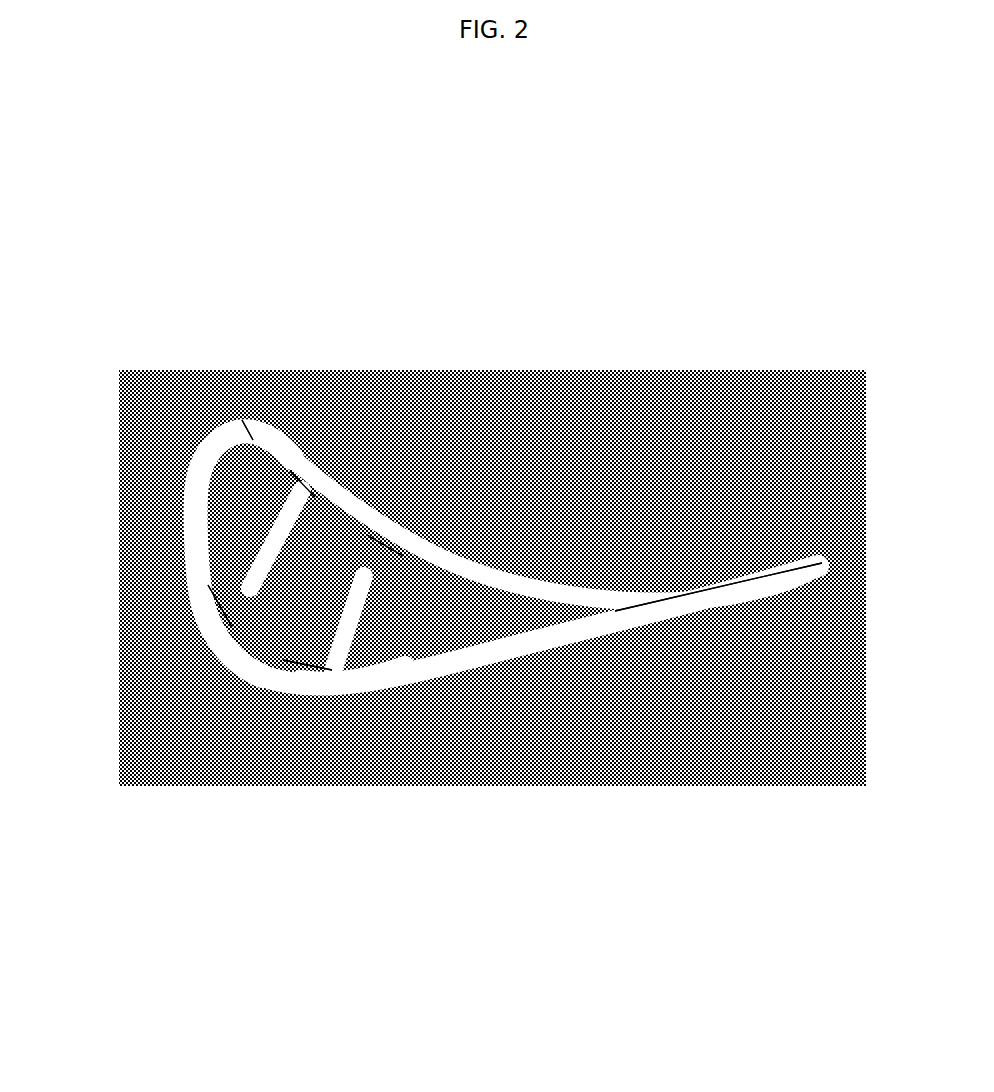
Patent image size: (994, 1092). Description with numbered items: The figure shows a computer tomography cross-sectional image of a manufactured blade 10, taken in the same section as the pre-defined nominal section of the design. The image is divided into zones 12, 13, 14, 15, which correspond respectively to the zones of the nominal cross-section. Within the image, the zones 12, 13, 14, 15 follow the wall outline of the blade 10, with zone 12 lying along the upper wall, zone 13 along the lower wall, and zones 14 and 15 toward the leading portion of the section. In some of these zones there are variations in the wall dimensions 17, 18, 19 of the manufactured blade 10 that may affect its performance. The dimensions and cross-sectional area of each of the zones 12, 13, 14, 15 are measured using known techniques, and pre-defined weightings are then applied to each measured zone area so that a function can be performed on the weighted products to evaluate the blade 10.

The airfoil 10 is at (213, 818).
The zone 12 is at (458, 563).
The zone 13 is at (463, 677).
The zone 14 is at (360, 582).
The zone 15 is at (292, 488).
The wall dimension 17 is at (398, 661).
The wall dimension 18 is at (293, 508).
The wall dimension 19 is at (245, 583).